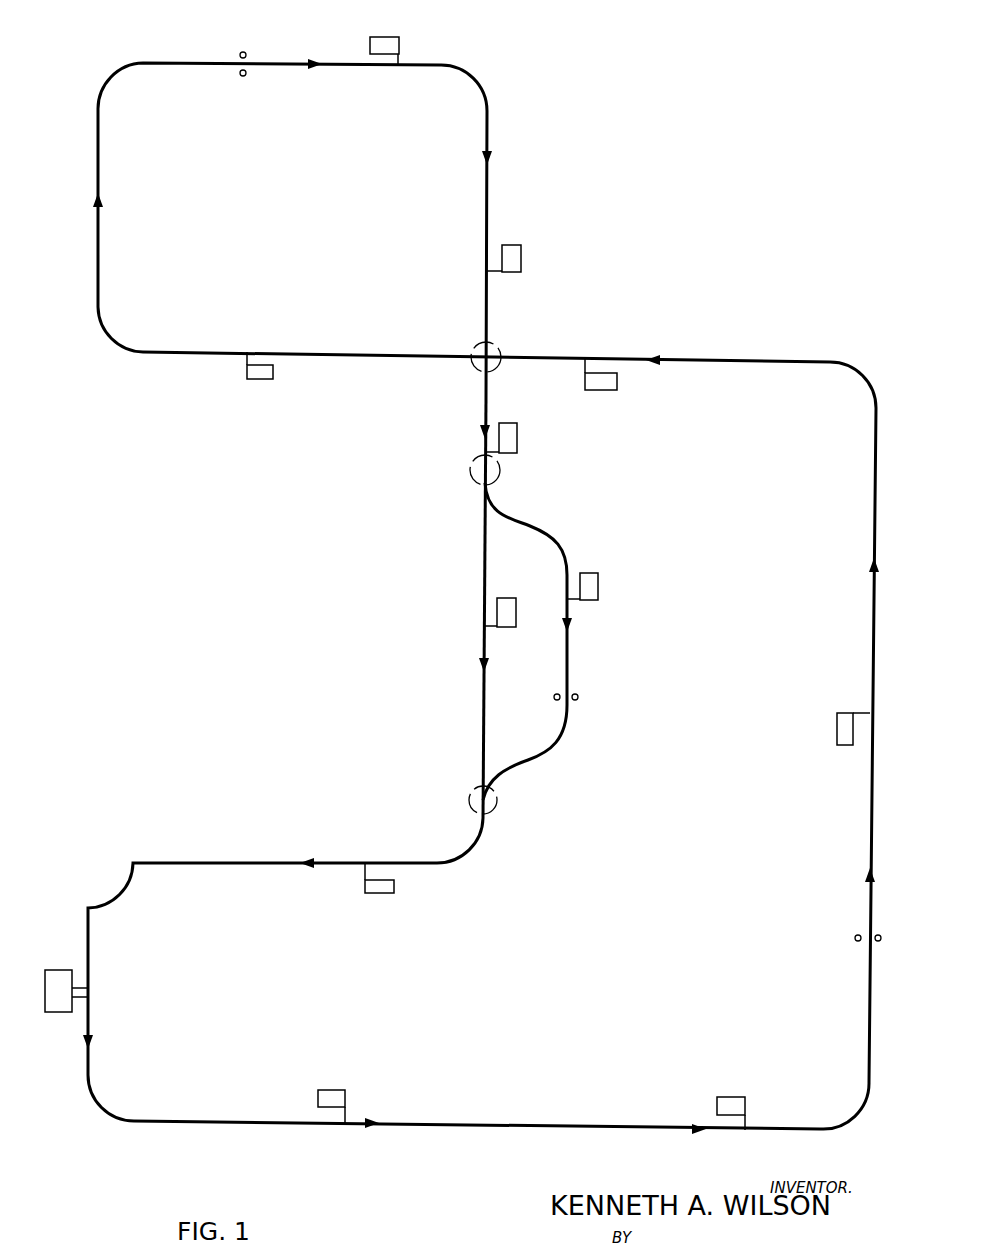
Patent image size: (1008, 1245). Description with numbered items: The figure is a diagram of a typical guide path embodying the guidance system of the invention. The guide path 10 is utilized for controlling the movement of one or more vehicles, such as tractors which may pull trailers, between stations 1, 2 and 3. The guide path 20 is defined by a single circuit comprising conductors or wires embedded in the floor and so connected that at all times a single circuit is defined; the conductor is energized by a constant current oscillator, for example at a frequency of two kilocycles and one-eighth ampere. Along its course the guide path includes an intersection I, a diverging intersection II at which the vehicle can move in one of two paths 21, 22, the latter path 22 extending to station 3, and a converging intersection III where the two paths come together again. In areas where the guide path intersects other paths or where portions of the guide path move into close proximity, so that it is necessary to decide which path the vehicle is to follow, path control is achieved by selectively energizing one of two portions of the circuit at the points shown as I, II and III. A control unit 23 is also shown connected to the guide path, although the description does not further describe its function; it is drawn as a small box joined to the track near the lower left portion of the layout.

The station 1 is at (856, 942).
The station 2 is at (245, 52).
The station 3 is at (578, 699).
The guide path 10 is at (512, 1123).
The guide path 20 is at (498, 161).
The path 21 is at (482, 705).
The path 22 is at (570, 655).
The control unit 23 is at (54, 970).
The intersection I is at (496, 346).
The diverging intersection II is at (476, 486).
The converging intersection III is at (470, 797).